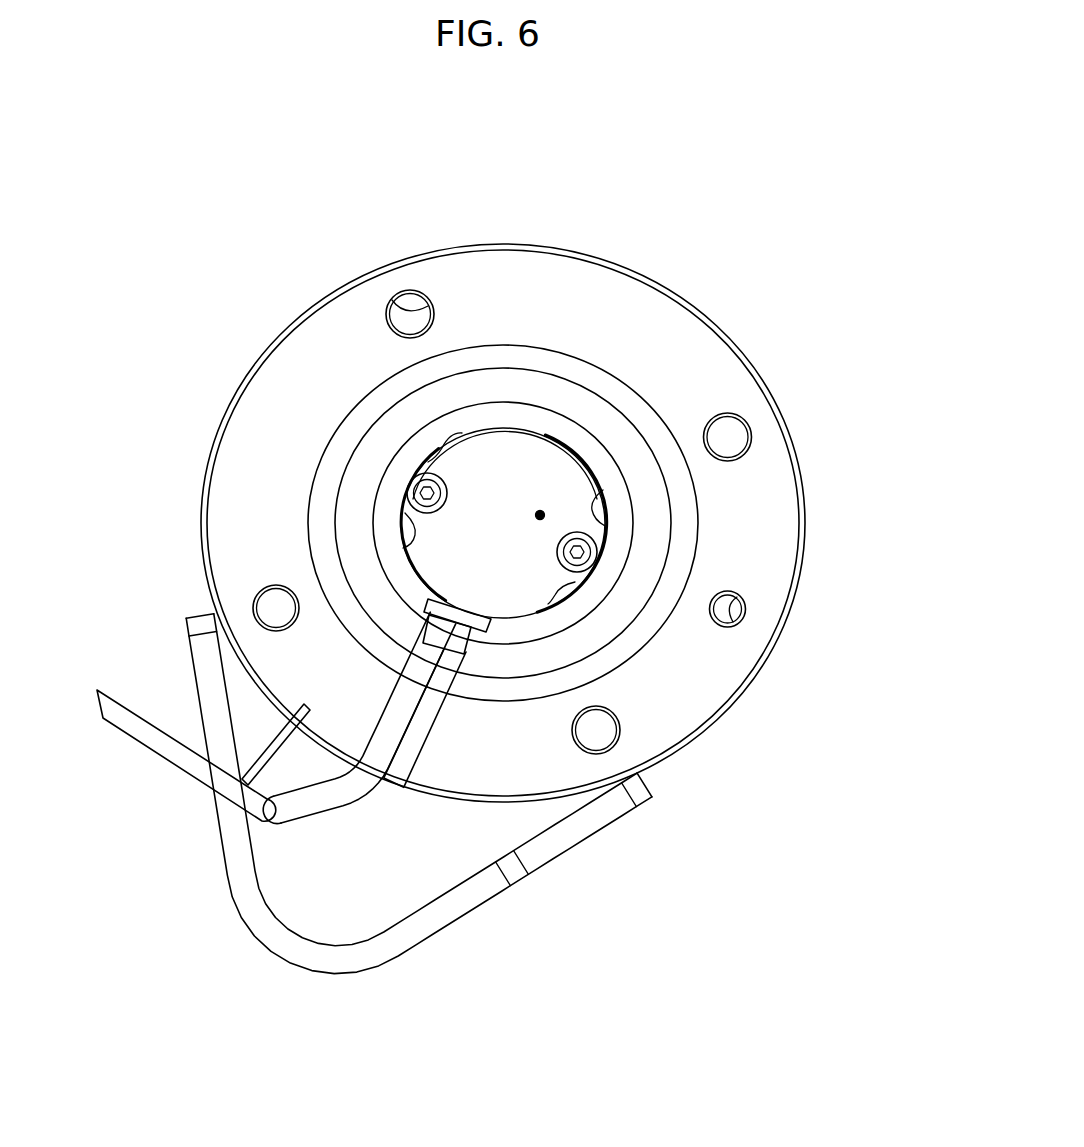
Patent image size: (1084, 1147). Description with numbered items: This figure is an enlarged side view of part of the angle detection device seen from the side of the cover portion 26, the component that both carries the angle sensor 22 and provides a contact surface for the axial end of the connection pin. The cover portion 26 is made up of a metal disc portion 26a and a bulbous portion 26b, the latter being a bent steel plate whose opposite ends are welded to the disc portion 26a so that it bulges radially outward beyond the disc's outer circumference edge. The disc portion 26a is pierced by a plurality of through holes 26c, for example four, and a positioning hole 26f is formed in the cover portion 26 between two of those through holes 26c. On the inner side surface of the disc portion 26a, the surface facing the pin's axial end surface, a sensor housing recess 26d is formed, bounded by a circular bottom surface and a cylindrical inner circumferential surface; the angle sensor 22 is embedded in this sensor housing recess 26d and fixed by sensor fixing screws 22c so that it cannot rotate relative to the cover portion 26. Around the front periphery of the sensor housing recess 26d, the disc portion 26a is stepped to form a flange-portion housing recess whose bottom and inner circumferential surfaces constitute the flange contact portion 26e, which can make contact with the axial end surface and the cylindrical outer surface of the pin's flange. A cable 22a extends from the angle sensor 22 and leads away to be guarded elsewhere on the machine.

The cover portion 26 is at (530, 246).
The disc portion 26a is at (713, 357).
The bulbous portion 26b is at (597, 835).
The through hole 26c is at (392, 298).
The sensor housing recess 26d is at (566, 424).
The flange contact portion 26e is at (500, 662).
The positioning hole 26f is at (745, 601).
The angle sensor 22 is at (465, 552).
The cable 22a is at (122, 702).
The sensor fixing screw 22c is at (437, 480).